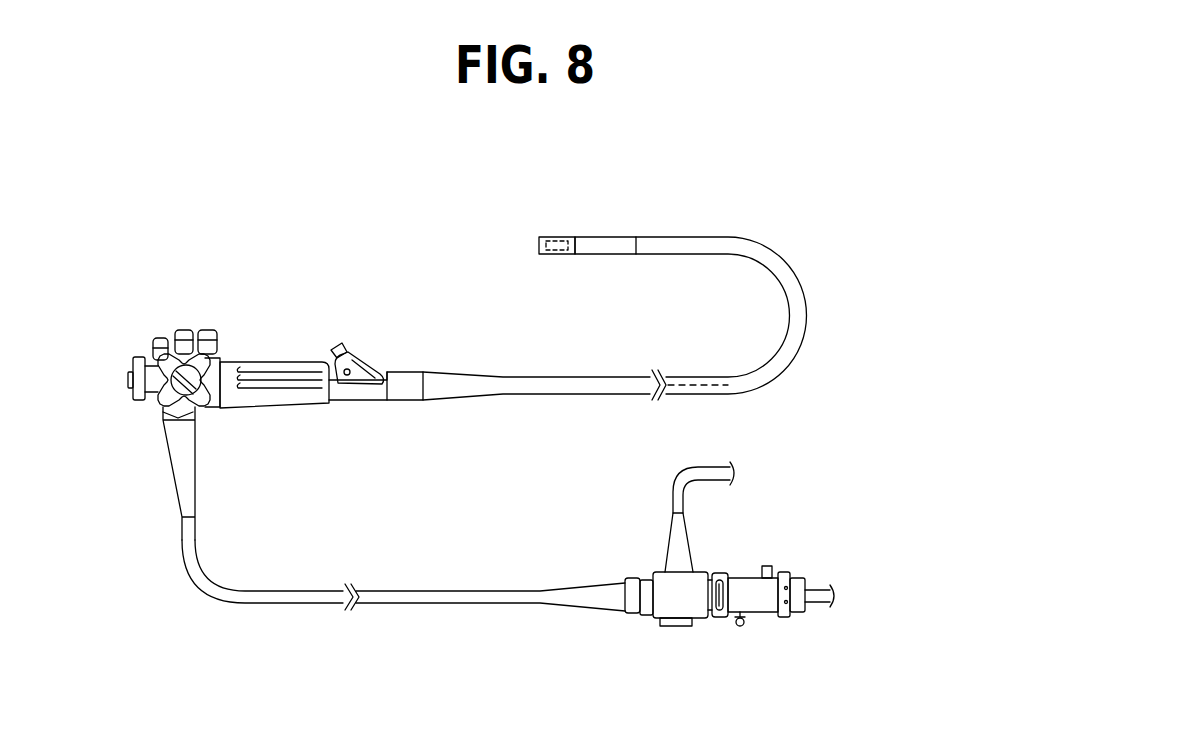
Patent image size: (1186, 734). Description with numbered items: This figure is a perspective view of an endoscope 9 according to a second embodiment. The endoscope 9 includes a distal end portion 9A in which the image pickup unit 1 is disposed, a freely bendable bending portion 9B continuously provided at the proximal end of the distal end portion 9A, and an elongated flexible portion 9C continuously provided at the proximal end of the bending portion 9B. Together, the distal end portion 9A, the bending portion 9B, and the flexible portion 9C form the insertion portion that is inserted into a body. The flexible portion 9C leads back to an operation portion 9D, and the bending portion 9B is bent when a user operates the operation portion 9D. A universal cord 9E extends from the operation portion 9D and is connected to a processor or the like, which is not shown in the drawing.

The endoscope 9 is at (848, 186).
The distal end portion 9A is at (562, 237).
The bending portion 9B is at (622, 237).
The flexible portion 9C is at (810, 303).
The operation portion 9D is at (264, 360).
The universal cord 9E is at (296, 591).
The image pickup unit 1 is at (558, 258).